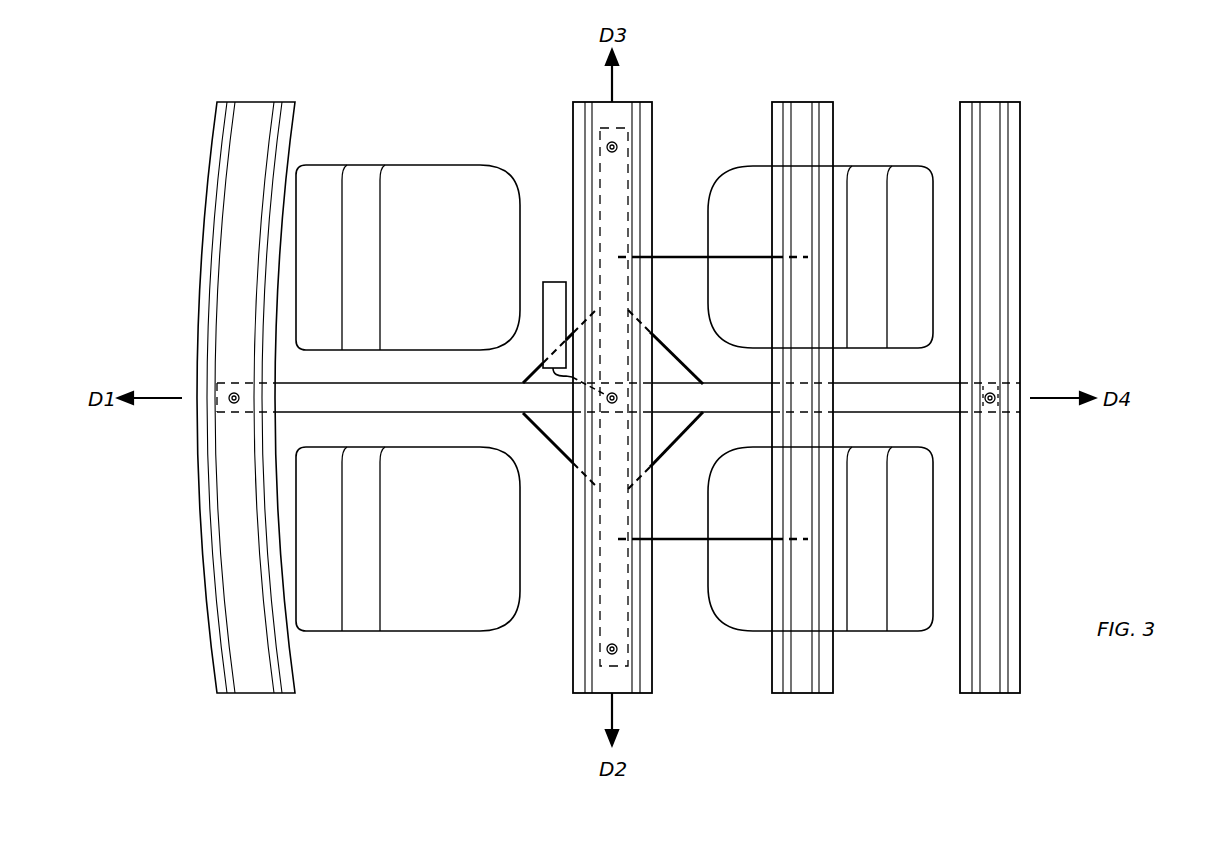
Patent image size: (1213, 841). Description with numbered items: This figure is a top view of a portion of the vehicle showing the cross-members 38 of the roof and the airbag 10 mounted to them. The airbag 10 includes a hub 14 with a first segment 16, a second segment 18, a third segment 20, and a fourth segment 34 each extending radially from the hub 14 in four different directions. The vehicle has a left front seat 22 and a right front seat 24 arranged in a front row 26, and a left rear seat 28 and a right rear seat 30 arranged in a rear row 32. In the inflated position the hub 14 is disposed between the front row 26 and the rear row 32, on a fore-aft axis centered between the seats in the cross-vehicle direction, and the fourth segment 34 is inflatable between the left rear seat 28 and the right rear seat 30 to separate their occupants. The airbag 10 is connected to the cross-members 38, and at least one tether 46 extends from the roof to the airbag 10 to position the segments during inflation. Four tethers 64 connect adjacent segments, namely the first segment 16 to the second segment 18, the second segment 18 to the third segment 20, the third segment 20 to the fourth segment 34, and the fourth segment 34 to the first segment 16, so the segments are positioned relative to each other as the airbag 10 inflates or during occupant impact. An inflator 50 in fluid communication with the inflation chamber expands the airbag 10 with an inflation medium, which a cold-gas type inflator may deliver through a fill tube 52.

The airbag 10 is at (298, 372).
The hub 14 is at (618, 405).
The first segment 16 is at (290, 406).
The second segment 18 is at (618, 615).
The third segment 20 is at (620, 180).
The left front seat 22 is at (415, 616).
The right front seat 24 is at (415, 180).
The front row 26 is at (375, 676).
The left rear seat 28 is at (872, 618).
The right rear seat 30 is at (872, 174).
The rear row 32 is at (851, 676).
The fourth segment 34 is at (893, 382).
The cross-members 38 is at (262, 101).
The tether 46 is at (688, 256).
The inflator 50 is at (553, 281).
The fill tube 52 is at (562, 374).
The tether 64 is at (525, 378).